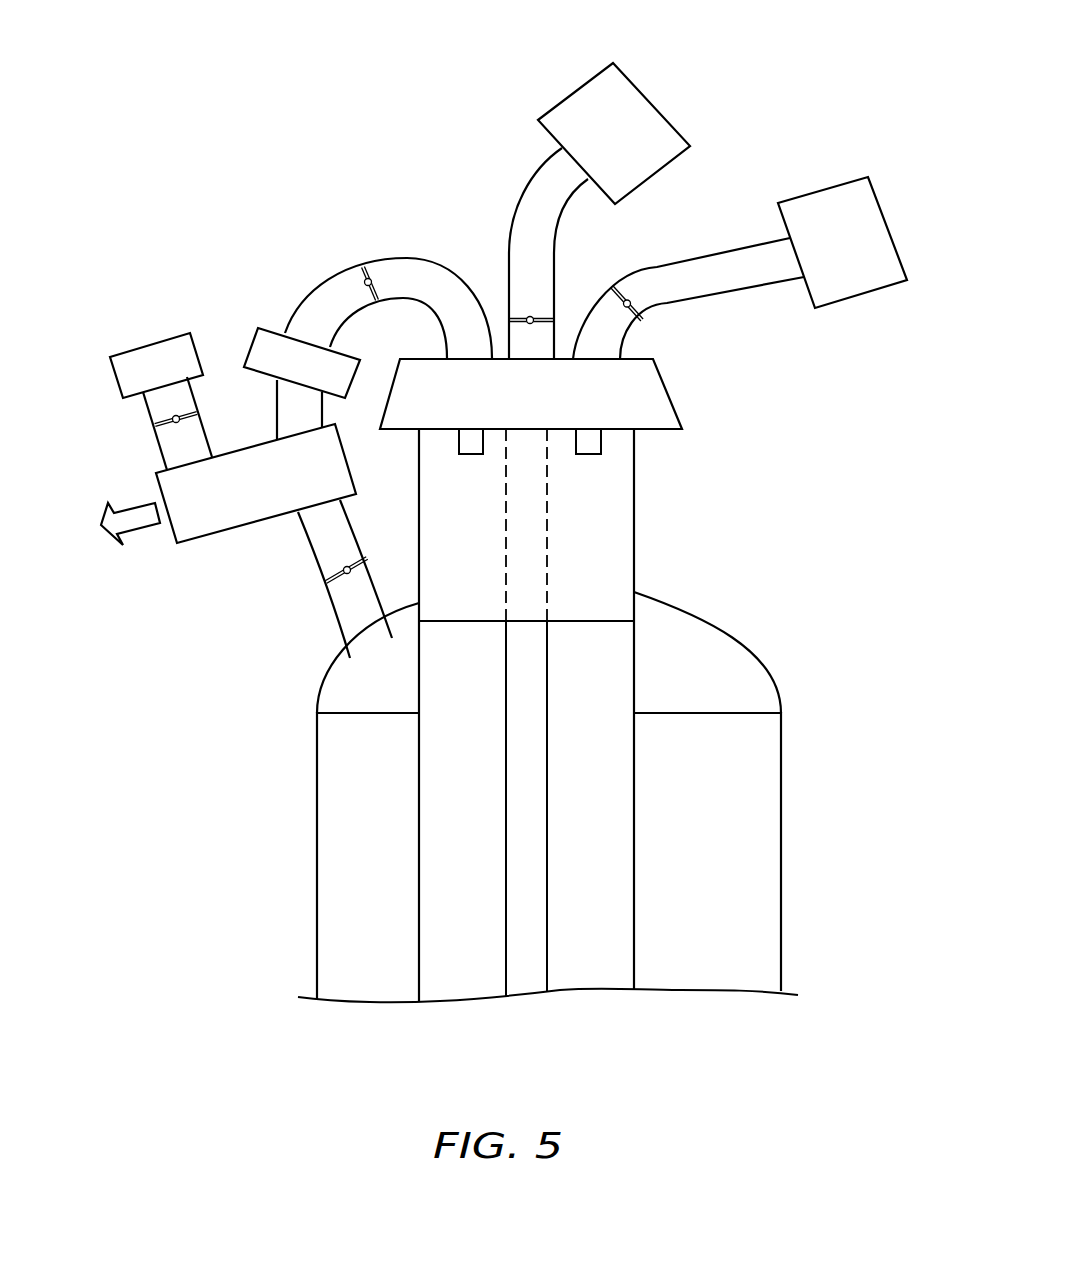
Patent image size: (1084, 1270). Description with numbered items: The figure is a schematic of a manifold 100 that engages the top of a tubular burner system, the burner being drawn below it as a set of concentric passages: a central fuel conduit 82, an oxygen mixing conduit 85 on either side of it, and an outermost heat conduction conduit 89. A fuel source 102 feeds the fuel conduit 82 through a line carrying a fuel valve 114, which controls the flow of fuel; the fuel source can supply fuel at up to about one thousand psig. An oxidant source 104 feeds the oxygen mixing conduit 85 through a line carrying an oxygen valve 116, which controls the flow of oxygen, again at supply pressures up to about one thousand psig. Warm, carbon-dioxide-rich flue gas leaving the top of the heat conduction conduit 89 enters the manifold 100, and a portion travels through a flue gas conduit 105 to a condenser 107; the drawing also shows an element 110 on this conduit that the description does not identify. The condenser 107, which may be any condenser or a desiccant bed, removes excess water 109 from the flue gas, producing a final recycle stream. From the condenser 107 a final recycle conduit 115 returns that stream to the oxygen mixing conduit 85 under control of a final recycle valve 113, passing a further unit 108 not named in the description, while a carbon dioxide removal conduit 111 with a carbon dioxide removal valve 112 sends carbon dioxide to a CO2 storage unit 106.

The manifold 100 is at (803, 29).
The fuel source 102 is at (655, 133).
The oxidant source 104 is at (867, 217).
The flue gas conduit 105 is at (338, 532).
The CO2 storage unit 106 is at (150, 357).
The condenser 107 is at (195, 530).
The reservoir 108 is at (270, 328).
The excess water 109 is at (127, 526).
The return valve 110 is at (338, 582).
The carbon dioxide removal conduit 111 is at (155, 403).
The carbon dioxide removal valve 112 is at (157, 425).
The final recycle valve 113 is at (368, 273).
The fuel valve 114 is at (518, 318).
The final recycle conduit 115 is at (325, 290).
The oxygen valve 116 is at (613, 288).
The fuel conduit 82 is at (540, 777).
The oxygen mixing conduit 85 is at (480, 777).
The heat conduction conduit 89 is at (386, 777).